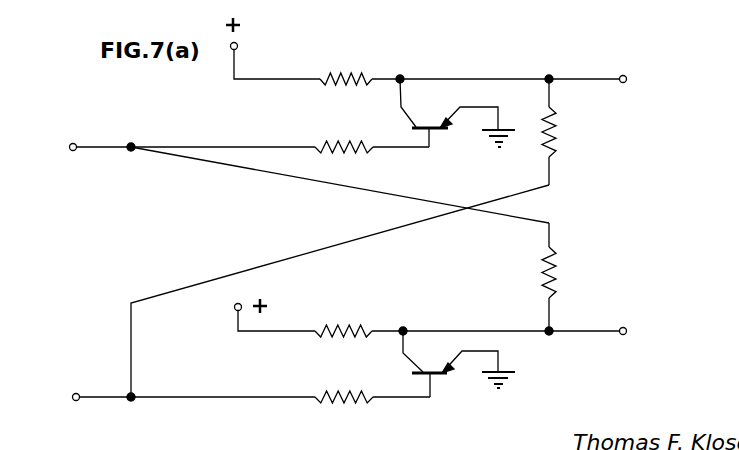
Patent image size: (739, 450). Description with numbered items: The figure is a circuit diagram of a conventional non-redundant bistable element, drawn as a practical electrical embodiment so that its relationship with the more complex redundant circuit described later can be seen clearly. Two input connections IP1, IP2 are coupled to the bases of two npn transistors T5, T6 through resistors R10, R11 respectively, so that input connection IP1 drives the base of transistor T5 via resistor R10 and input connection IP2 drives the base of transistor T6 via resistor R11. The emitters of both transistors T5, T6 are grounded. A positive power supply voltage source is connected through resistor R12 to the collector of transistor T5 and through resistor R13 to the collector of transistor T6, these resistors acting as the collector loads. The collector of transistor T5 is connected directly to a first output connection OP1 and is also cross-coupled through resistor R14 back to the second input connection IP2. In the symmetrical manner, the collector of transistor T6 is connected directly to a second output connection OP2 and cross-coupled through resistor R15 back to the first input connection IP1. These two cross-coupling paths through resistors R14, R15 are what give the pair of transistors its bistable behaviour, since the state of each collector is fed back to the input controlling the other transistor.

The input connection IP1 is at (169, 149).
The input connection IP2 is at (169, 400).
The output connection OP1 is at (650, 80).
The output connection OP2 is at (650, 334).
The resistor R10 is at (372, 134).
The resistor R11 is at (357, 402).
The resistor R12 is at (346, 65).
The resistor R13 is at (345, 320).
The resistor R14 is at (557, 133).
The resistor R15 is at (557, 273).
The npn transistor T5 is at (457, 125).
The npn transistor T6 is at (459, 371).